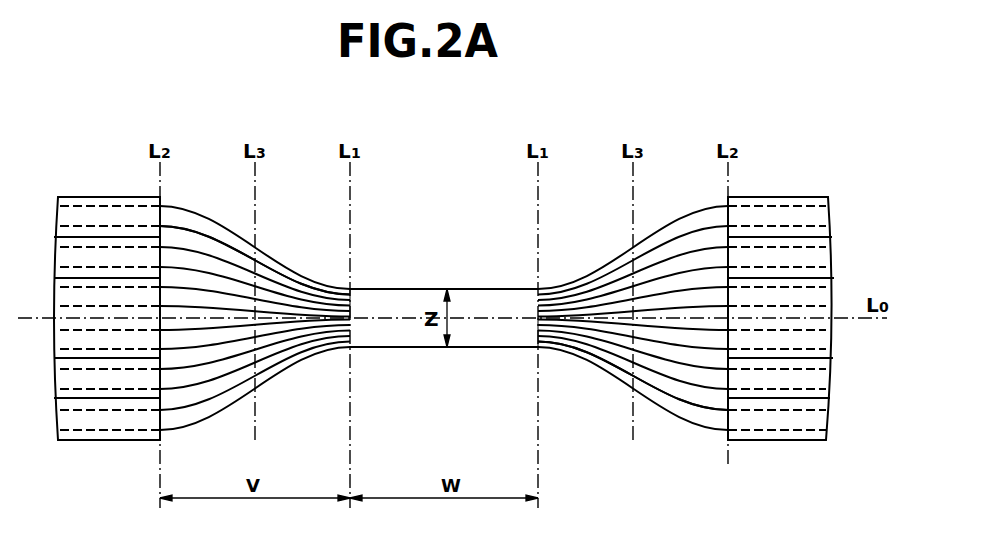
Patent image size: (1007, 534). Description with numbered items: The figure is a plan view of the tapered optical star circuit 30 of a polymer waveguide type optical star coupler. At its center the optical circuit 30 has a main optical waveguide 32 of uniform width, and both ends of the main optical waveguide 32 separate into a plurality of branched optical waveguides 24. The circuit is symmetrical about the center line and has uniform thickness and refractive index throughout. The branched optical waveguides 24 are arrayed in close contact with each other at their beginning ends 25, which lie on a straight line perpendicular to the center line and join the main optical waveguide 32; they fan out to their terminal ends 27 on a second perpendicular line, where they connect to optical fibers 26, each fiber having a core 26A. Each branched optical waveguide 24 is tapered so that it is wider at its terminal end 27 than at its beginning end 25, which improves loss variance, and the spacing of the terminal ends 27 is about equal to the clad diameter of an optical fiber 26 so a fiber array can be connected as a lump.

The branched optical waveguide 24 is at (288, 365).
The beginning end 25 is at (353, 312).
The optical fiber 26 is at (128, 197).
The core 26A is at (140, 428).
The terminal end 27 is at (163, 236).
The optical circuit 30 is at (410, 357).
The main optical waveguide 32 is at (420, 289).